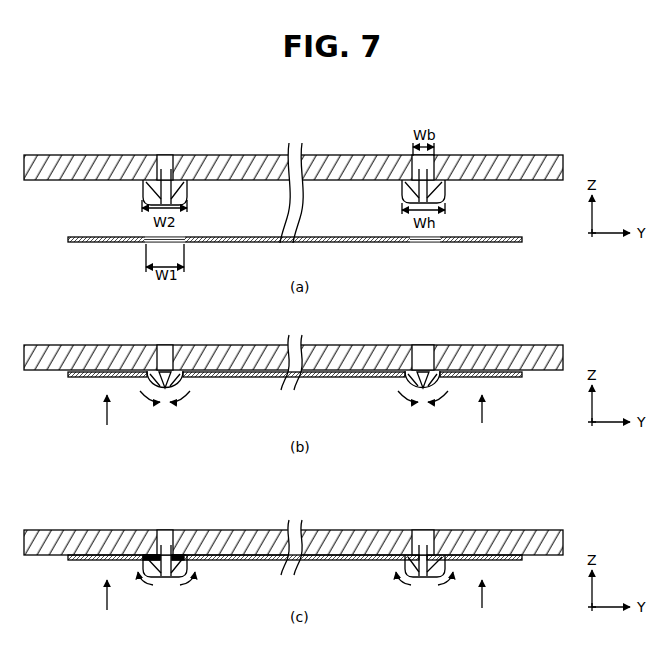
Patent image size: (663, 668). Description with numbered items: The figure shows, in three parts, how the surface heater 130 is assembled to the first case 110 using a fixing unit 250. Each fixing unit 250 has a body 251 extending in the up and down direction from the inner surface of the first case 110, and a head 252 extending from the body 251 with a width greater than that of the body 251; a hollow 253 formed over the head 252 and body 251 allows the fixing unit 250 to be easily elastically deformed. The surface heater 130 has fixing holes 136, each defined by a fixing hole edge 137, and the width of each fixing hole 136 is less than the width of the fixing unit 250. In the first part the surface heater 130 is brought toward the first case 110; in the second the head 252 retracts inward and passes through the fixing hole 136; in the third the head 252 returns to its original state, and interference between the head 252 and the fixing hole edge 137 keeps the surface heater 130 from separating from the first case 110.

The first case 110 is at (318, 166).
The surface heater 130 is at (522, 239).
The fixing hole 136 is at (178, 240).
The fixing hole edge 137 is at (147, 557).
The fixing unit 250 is at (290, 370).
The body 251 is at (178, 181).
The head 252 is at (189, 184).
The hollow 253 is at (165, 181).